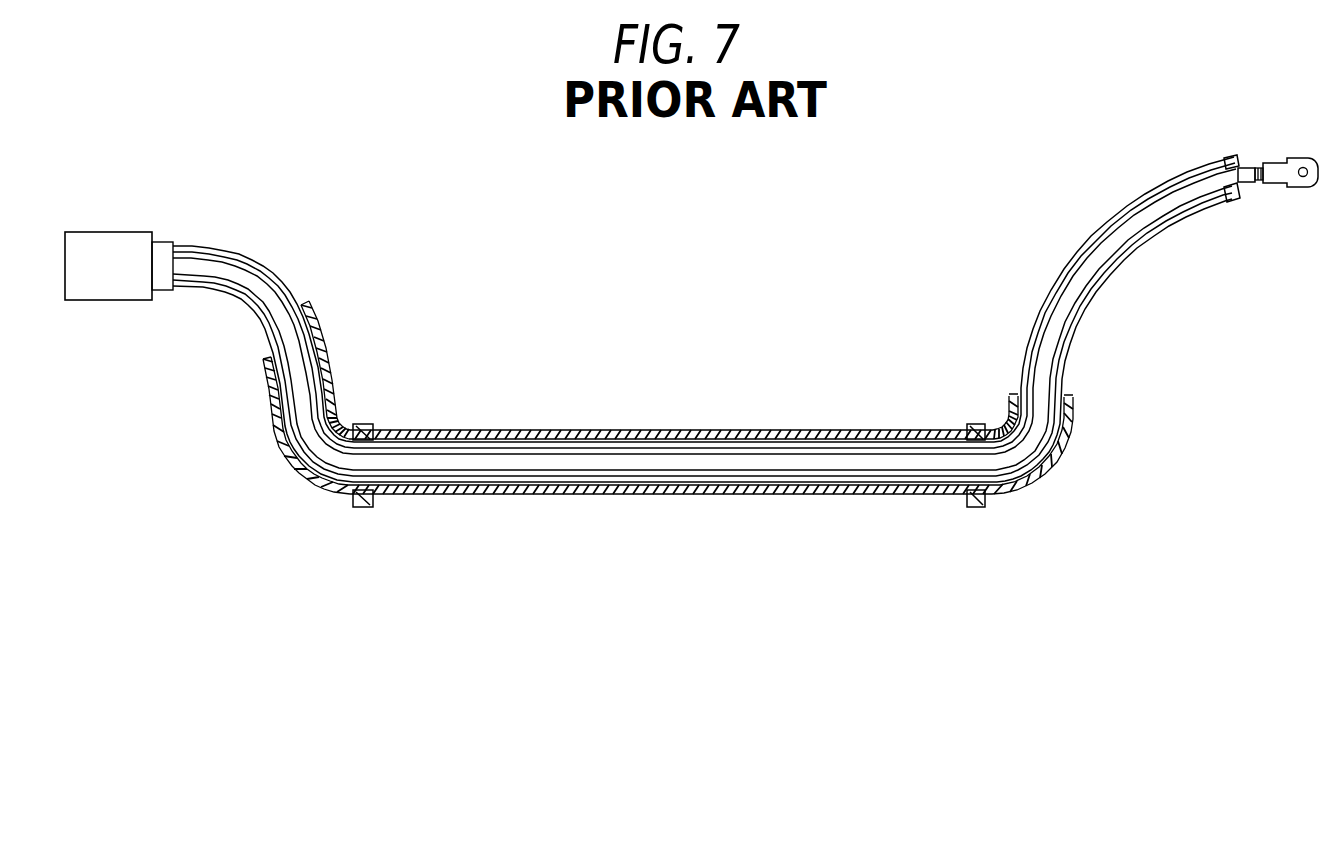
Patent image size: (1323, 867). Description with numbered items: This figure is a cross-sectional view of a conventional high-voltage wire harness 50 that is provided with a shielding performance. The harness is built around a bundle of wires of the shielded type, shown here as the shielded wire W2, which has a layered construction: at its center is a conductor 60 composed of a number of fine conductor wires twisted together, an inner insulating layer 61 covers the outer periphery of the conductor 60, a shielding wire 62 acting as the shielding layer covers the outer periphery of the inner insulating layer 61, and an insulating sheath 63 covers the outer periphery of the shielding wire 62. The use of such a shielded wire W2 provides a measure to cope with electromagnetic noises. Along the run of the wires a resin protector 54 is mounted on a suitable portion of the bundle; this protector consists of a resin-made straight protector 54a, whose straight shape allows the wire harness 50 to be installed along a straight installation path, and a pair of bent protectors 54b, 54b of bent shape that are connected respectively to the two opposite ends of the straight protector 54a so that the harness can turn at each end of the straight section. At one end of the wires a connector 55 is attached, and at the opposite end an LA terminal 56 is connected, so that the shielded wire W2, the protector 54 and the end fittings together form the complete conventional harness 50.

The high-voltage wire harness 50 is at (632, 325).
The resin protector 54 is at (773, 510).
The straight protector 54a is at (665, 497).
The bent protector 54b is at (307, 467).
The connector 55 is at (110, 243).
The LA terminal 56 is at (1277, 176).
The conductor 60 is at (243, 287).
The inner insulating layer 61 is at (263, 327).
The shielding wire 62 is at (290, 303).
The insulating sheath 63 is at (220, 293).
The shielded wire W2 is at (229, 243).